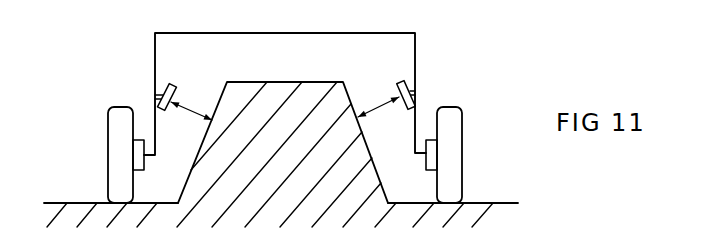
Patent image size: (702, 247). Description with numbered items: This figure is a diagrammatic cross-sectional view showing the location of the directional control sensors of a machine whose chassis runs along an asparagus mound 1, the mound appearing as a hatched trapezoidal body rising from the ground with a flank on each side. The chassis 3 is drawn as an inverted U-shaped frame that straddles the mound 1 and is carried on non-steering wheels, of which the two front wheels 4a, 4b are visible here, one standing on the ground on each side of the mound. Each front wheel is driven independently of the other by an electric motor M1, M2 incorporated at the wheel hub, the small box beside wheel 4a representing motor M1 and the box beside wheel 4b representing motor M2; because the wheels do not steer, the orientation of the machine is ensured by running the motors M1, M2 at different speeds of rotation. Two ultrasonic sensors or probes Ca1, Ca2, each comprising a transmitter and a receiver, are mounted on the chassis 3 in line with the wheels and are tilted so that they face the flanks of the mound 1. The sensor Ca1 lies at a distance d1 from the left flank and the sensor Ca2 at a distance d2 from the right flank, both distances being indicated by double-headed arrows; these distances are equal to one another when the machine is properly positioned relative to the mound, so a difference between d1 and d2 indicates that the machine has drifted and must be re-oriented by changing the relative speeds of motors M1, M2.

The mound 1 is at (285, 81).
The chassis 3 is at (415, 43).
The front wheel 4a is at (115, 120).
The front wheel 4b is at (455, 118).
The electric motor M1 is at (141, 139).
The electric motor M2 is at (430, 139).
The ultrasonic sensor Ca1 is at (174, 81).
The ultrasonic sensor Ca2 is at (400, 78).
The distance d1 is at (191, 101).
The distance d2 is at (378, 100).